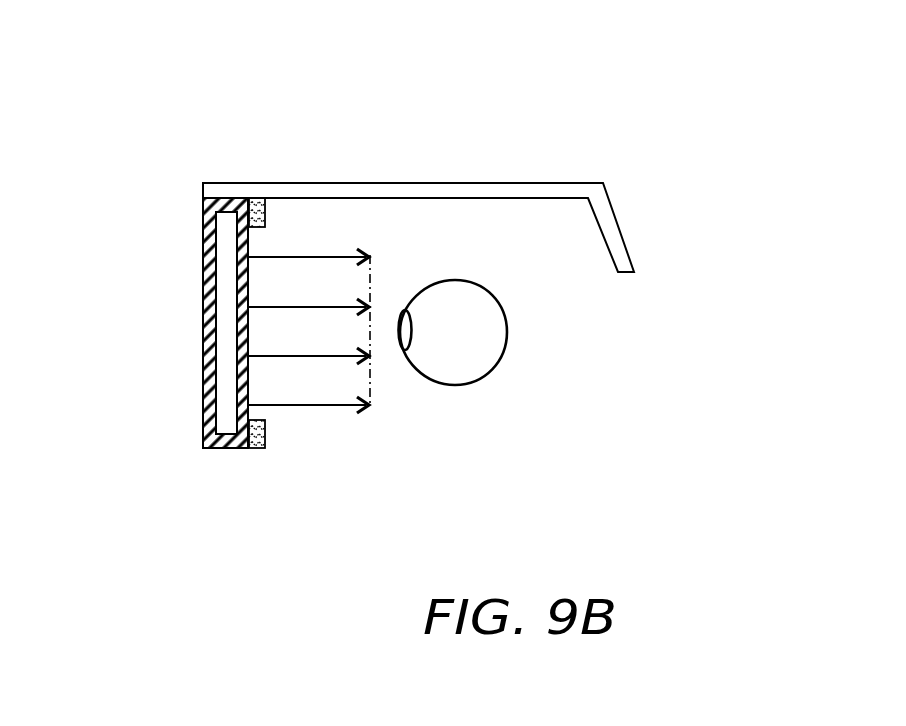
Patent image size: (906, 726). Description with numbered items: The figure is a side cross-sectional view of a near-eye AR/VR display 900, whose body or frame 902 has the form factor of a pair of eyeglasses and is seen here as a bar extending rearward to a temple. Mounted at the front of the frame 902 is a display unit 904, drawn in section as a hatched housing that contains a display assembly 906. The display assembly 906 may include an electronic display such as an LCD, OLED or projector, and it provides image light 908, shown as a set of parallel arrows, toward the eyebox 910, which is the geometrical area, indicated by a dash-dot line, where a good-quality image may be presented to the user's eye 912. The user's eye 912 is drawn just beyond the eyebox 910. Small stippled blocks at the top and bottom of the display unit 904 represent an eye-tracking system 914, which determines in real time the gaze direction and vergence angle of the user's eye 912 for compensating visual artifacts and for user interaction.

The near-eye AR/VR display 900 is at (243, 126).
The frame 902 is at (558, 187).
The display unit 904 is at (203, 213).
The display assembly 906 is at (228, 298).
The image light 908 is at (326, 420).
The eyebox 910 is at (373, 392).
The user's eye 912 is at (493, 342).
The eye-tracking system 914 is at (265, 205).